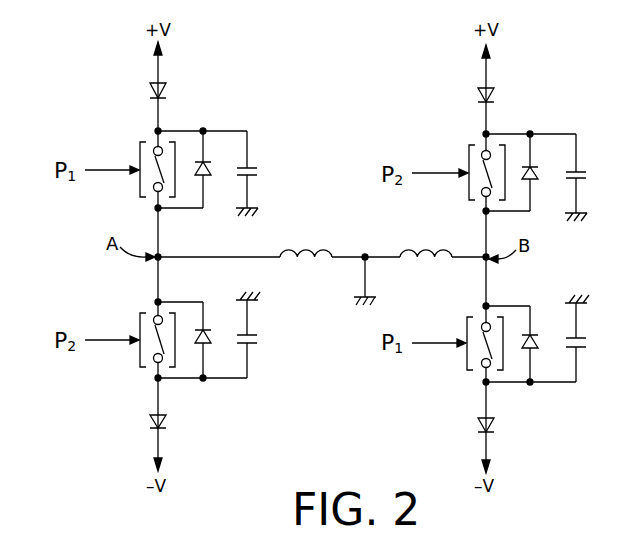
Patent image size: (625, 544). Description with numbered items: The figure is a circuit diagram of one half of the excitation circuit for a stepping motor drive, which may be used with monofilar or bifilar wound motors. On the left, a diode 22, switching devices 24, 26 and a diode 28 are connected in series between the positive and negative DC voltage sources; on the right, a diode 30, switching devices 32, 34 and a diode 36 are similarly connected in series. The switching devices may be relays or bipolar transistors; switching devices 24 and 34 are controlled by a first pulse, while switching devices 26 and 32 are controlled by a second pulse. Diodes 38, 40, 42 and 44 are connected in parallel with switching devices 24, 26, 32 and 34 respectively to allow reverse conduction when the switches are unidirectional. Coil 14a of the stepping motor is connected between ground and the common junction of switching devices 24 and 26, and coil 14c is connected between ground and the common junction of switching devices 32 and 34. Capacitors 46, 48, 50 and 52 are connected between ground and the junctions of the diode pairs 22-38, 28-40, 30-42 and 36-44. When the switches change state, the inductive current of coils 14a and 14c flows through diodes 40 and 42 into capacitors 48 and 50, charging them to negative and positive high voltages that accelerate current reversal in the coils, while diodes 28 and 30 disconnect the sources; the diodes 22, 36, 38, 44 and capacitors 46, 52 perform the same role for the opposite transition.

The coil 14a is at (318, 249).
The coil 14c is at (440, 249).
The diode 22 is at (166, 92).
The switching device 24 is at (140, 148).
The switching device 26 is at (140, 318).
The diode 28 is at (166, 422).
The diode 30 is at (494, 95).
The switching device 32 is at (469, 151).
The switching device 34 is at (467, 322).
The diode 36 is at (478, 425).
The diode 38 is at (211, 170).
The diode 40 is at (211, 337).
The diode 42 is at (538, 175).
The diode 44 is at (538, 343).
The capacitor 46 is at (254, 168).
The capacitor 48 is at (256, 345).
The capacitor 50 is at (583, 172).
The capacitor 52 is at (583, 350).